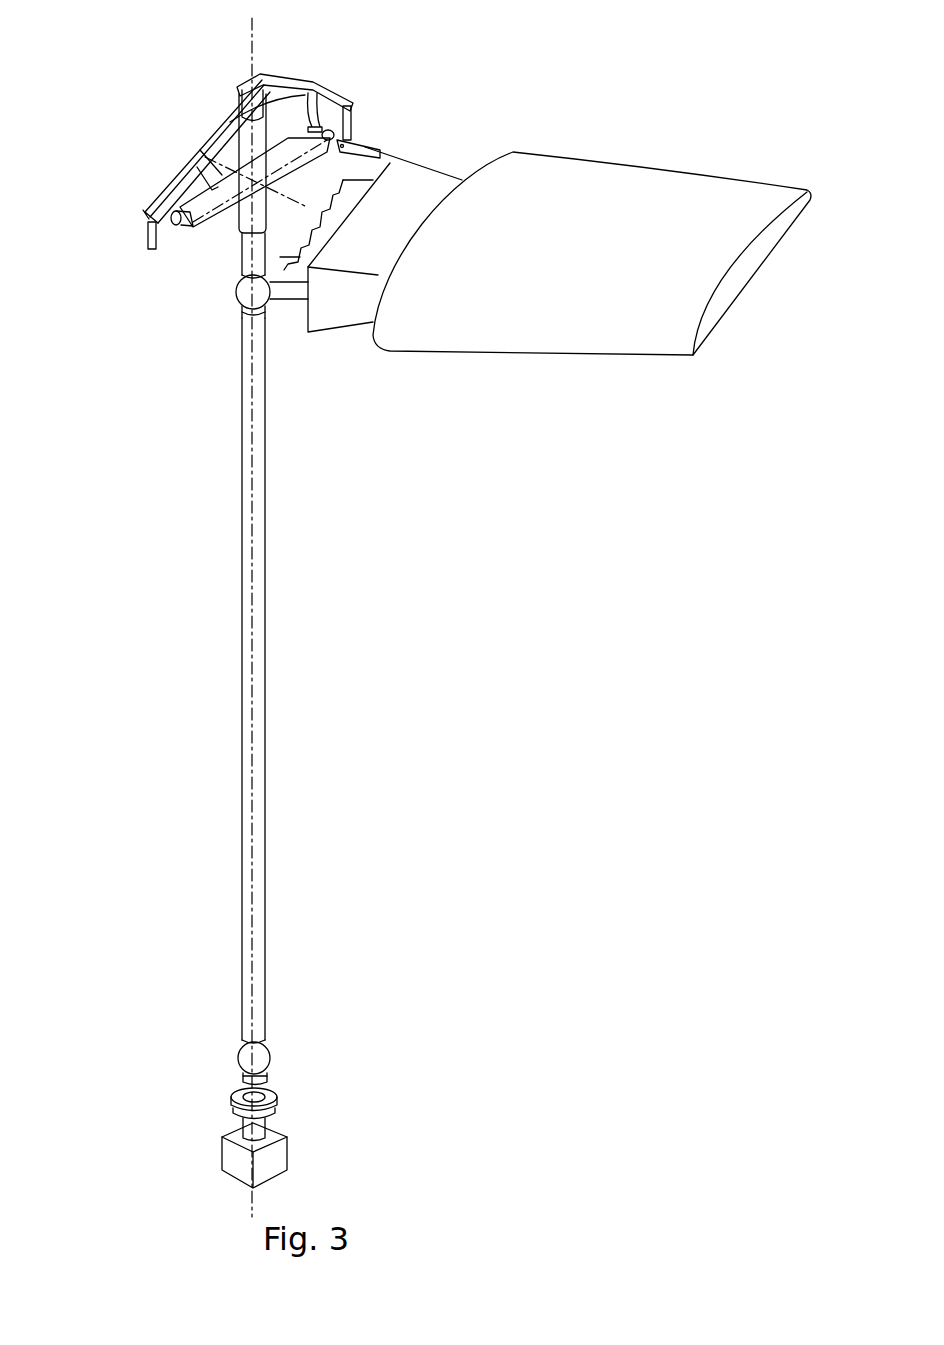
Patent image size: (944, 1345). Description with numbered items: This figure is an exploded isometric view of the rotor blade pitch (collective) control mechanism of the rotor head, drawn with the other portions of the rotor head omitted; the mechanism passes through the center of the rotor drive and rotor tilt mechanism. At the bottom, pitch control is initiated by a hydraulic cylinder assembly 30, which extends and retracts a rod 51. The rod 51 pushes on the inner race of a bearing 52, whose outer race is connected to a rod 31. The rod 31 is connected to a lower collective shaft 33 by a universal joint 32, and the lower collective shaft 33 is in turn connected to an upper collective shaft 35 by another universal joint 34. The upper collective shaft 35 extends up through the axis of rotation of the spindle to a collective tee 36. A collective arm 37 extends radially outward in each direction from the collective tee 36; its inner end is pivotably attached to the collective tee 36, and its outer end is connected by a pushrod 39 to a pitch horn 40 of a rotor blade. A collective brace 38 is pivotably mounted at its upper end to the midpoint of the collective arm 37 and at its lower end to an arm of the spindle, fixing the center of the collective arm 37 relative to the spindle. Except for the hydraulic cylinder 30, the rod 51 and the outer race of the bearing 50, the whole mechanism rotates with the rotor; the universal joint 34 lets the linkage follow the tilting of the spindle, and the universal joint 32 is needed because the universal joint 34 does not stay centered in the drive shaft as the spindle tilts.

The hydraulic cylinder assembly 30 is at (290, 1165).
The rod 31 is at (266, 1070).
The universal joint 32 is at (274, 1056).
The lower collective shaft 33 is at (265, 677).
The universal joint 34 is at (236, 297).
The upper collective shaft 35 is at (240, 253).
The collective tee 36 is at (257, 73).
The collective arm 37 is at (218, 100).
The collective brace 38 is at (190, 155).
The pushrod 39 is at (350, 110).
The pitch horn 40 is at (362, 143).
The bearing 50 is at (275, 1118).
The rod 51 is at (240, 1122).
The bearing 52 is at (230, 1099).